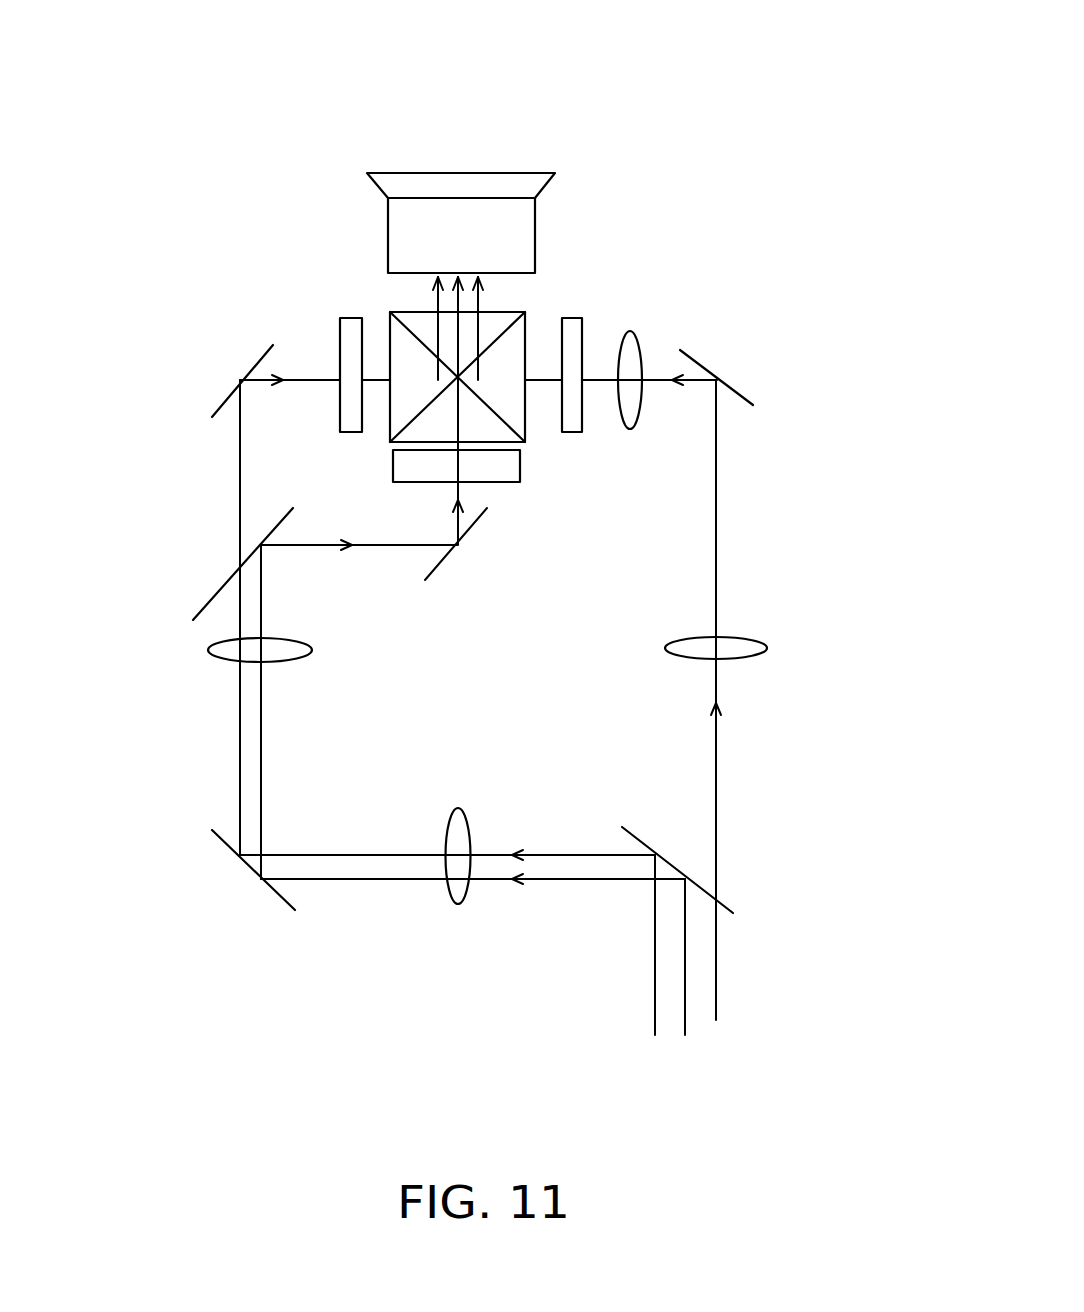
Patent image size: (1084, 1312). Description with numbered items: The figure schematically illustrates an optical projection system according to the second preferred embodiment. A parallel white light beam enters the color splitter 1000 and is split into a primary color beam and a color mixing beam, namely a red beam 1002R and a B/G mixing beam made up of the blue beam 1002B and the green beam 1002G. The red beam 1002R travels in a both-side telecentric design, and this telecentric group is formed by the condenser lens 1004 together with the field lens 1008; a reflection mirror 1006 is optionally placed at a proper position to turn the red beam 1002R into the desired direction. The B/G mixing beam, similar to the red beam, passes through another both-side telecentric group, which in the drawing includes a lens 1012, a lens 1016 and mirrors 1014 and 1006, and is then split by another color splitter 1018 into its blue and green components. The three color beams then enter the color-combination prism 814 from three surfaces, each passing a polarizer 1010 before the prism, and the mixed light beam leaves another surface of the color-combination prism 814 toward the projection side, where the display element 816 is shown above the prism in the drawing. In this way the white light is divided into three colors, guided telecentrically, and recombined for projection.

The display screen 816 is at (492, 172).
The color-combination prism 814 is at (505, 312).
The polarizer 1010 is at (350, 317).
The field lens 1008 is at (630, 330).
The reflection mirror 1006 is at (223, 402).
The color splitter 1018 is at (240, 570).
The lens 1016 is at (313, 647).
The condenser lens 1004 is at (743, 638).
The red beam 1002R is at (716, 770).
The lens 1012 is at (458, 808).
The blue beam 1002B is at (548, 853).
The green beam 1002G is at (573, 878).
The color splitter 1000 is at (720, 897).
The mirror 1014 is at (277, 895).